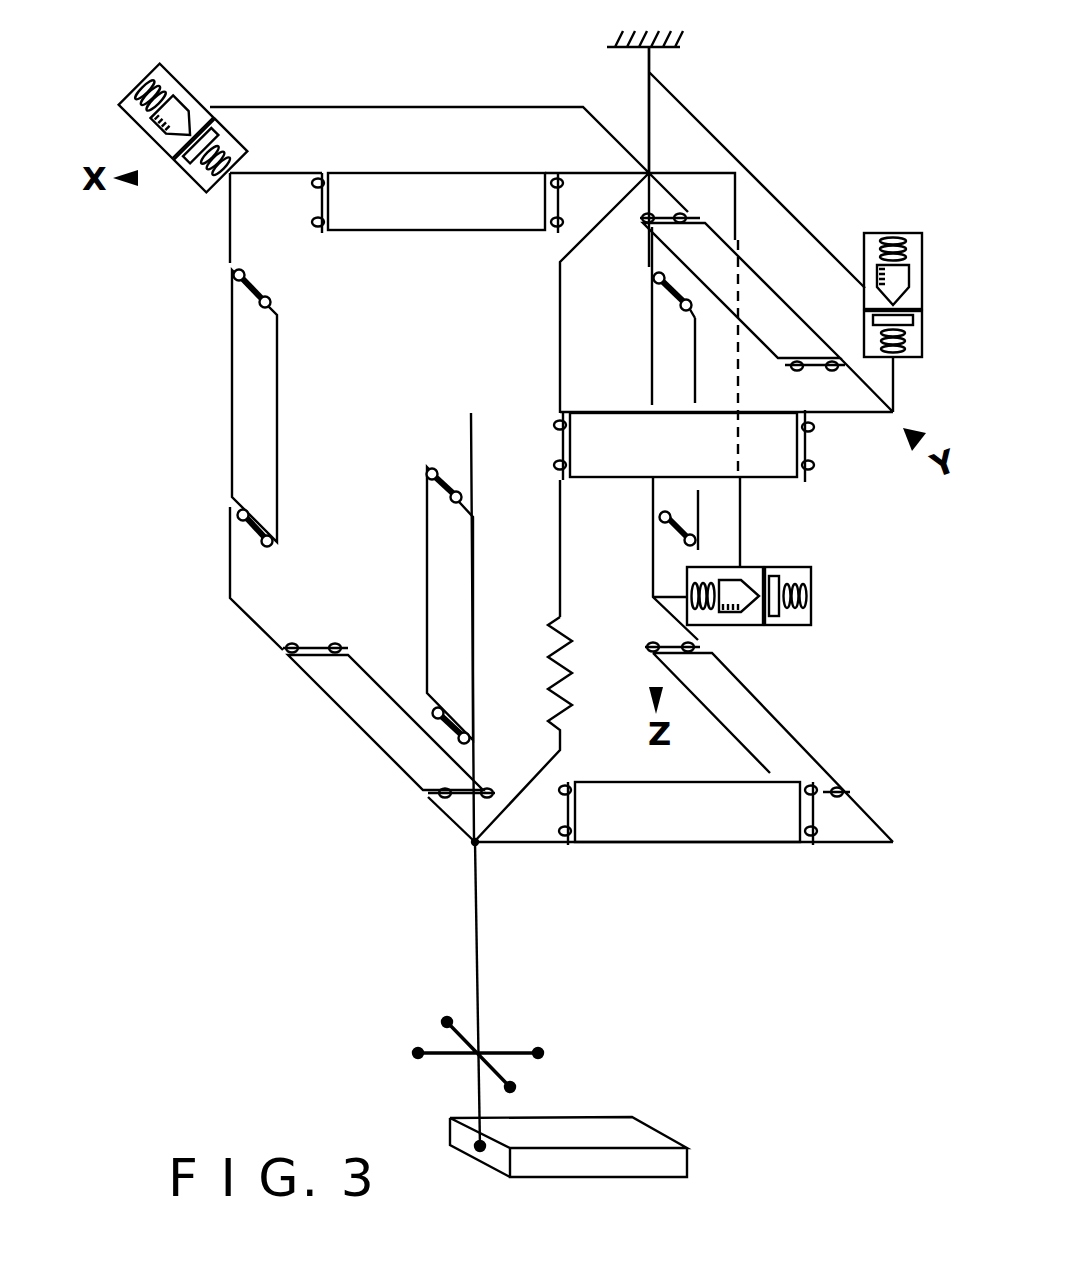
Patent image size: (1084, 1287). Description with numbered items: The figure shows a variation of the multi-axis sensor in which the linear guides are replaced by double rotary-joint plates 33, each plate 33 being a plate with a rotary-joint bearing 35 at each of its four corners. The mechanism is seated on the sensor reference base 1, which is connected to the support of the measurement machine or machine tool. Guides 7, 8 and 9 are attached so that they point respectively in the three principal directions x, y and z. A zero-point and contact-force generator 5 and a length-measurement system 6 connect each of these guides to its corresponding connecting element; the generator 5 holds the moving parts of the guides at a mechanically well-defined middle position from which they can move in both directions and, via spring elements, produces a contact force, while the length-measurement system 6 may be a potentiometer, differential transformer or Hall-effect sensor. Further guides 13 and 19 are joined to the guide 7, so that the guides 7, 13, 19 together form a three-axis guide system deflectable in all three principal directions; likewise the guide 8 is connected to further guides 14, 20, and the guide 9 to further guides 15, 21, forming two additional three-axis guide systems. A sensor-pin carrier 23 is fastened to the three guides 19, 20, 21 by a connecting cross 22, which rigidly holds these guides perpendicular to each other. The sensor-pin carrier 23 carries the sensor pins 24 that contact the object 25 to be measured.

The sensor reference base 1 is at (645, 85).
The zero-point and contact-force generator 5 is at (174, 80).
The length-measurement system 6 is at (222, 118).
The guide 7 is at (354, 172).
The guide 8 is at (716, 218).
The guide 9 is at (688, 335).
The guide 13 is at (222, 336).
The guide 14 is at (780, 446).
The guide 15 is at (806, 737).
The guide 19 is at (375, 763).
The guide 20 is at (422, 515).
The guide 21 is at (773, 845).
The connecting cross 22 is at (450, 846).
The sensor-pin carrier 23 is at (473, 962).
The sensor pin 24 is at (418, 1053).
The object 25 is at (645, 1140).
The double rotary-joint plate 33 is at (471, 186).
The rotary-joint bearing 35 is at (238, 270).